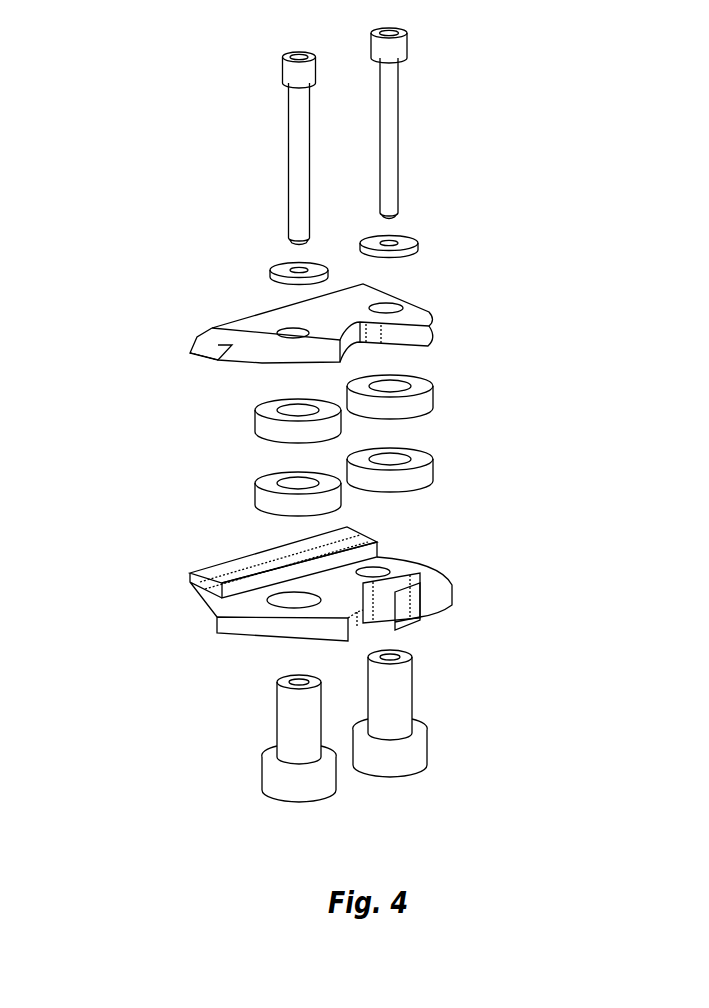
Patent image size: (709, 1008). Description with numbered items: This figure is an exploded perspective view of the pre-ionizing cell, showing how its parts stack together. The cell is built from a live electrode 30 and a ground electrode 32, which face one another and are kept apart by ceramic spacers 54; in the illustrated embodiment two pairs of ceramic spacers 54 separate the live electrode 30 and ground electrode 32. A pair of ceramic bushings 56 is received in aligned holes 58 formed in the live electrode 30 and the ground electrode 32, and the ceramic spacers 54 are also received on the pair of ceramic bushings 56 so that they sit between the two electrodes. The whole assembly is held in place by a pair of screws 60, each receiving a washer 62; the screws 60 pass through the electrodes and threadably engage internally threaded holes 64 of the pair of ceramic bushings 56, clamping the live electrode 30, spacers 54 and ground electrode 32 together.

The live electrode 30 is at (312, 627).
The ground electrode 32 is at (290, 357).
The ceramic spacers 54 is at (255, 492).
The ceramic bushings 56 is at (290, 770).
The aligned holes 58 is at (290, 333).
The screws 60 is at (290, 152).
The washers 62 is at (273, 270).
The internally threaded holes 64 is at (385, 655).